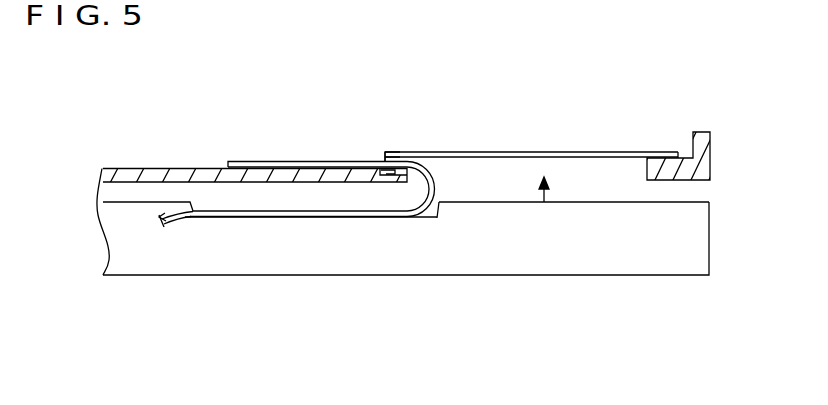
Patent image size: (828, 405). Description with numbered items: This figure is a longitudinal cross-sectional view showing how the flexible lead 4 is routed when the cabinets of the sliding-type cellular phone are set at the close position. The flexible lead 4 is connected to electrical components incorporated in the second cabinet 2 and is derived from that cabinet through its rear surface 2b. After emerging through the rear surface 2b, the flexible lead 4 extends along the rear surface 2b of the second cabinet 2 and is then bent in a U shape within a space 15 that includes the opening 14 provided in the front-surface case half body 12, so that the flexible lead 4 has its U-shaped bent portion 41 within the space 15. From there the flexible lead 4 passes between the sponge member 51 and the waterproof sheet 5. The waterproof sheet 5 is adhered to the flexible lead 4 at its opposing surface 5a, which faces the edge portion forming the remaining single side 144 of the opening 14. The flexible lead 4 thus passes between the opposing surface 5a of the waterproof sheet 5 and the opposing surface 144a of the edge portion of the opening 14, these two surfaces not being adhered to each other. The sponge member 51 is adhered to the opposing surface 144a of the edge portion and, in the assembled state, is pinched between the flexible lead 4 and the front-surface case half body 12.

The second cabinet 2 is at (403, 223).
The rear surface 2b is at (582, 202).
The flexible lead 4 is at (320, 155).
The U-shaped bent portion 41 is at (441, 176).
The waterproof sheet 5 is at (509, 117).
The opposing surface 5a is at (391, 160).
The sponge member 51 is at (385, 152).
The front-surface case half body 12 is at (259, 223).
The opening 14 is at (647, 172).
The space 15 is at (544, 202).
The remaining single side 144 is at (434, 206).
The opposing surface of the edge portion 144a is at (394, 176).